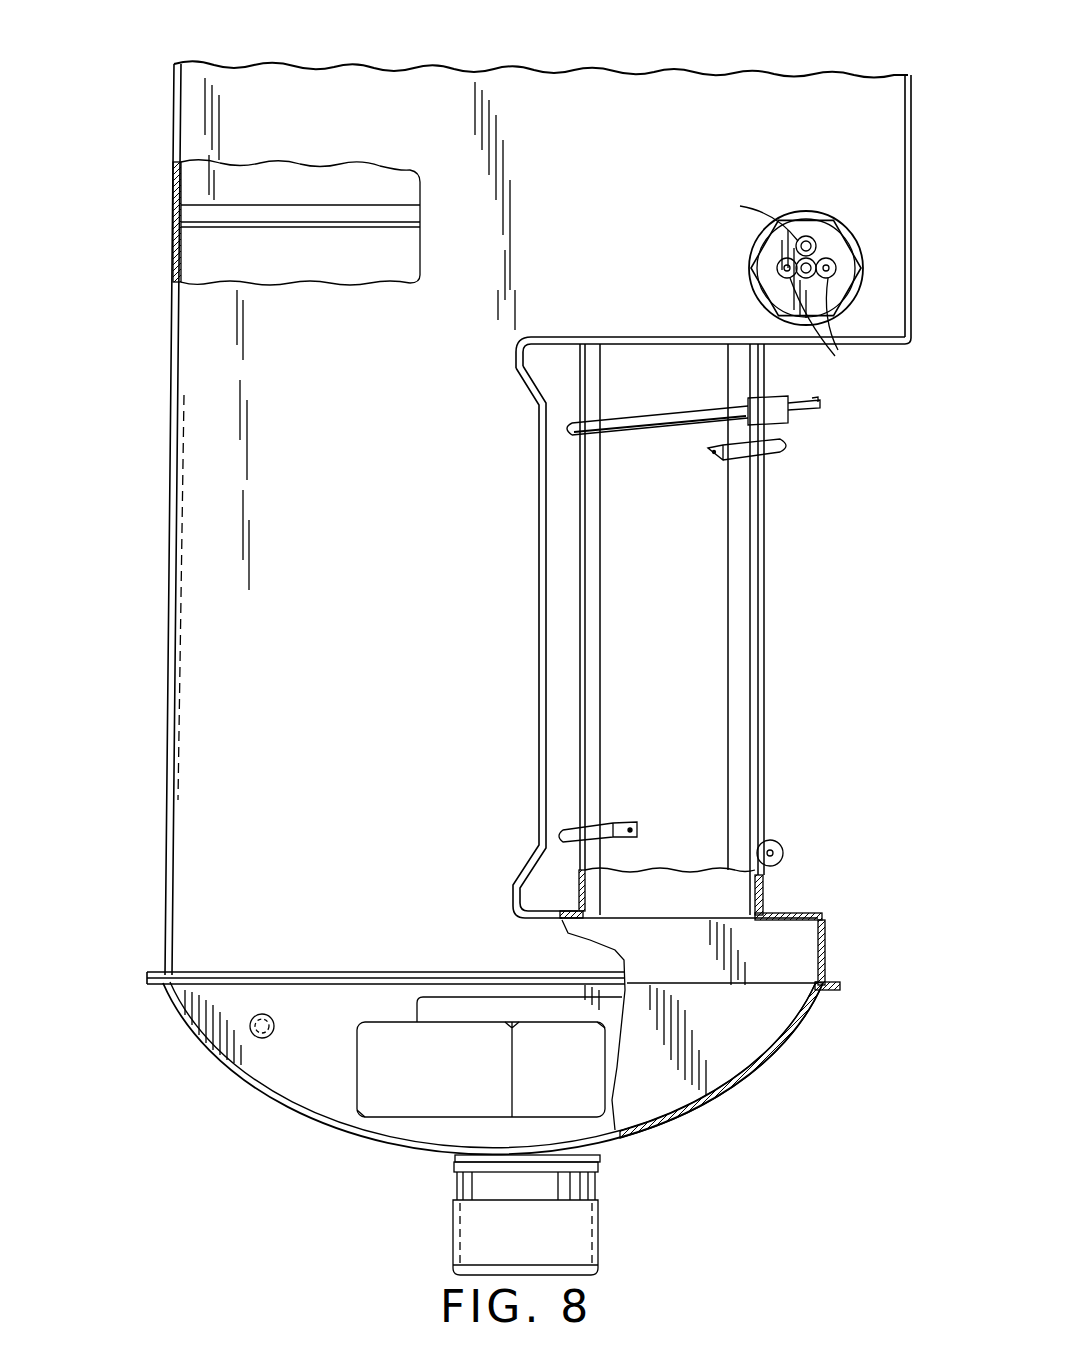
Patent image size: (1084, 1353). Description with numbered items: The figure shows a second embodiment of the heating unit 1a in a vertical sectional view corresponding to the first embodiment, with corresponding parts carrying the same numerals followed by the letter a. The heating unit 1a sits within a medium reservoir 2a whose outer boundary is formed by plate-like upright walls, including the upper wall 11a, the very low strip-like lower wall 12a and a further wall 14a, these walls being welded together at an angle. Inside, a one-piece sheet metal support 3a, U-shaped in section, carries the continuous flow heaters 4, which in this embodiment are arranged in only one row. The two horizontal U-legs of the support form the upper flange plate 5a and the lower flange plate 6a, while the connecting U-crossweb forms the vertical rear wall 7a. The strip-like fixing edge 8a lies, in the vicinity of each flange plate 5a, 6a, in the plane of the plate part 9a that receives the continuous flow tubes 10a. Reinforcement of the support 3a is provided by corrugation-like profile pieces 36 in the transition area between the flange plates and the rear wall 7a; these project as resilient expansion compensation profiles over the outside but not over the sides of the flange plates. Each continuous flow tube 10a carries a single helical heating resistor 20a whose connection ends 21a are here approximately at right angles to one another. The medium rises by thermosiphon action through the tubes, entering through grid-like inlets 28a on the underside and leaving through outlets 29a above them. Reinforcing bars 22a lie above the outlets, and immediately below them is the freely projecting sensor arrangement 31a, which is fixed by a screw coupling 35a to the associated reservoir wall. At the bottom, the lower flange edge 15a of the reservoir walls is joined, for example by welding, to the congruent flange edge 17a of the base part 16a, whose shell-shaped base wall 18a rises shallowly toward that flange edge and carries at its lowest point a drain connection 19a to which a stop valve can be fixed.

The heating unit 1a is at (898, 439).
The medium reservoir 2a is at (749, 49).
The support 3a is at (672, 591).
The continuous flow heater 4 is at (792, 694).
The upper flange plate 5a is at (579, 337).
The lower flange plate 6a is at (789, 915).
The rear wall 7a is at (539, 603).
The fixing edge 8a is at (880, 343).
The plate part 9a is at (706, 344).
The continuous flow tube 10a is at (766, 518).
The upper wall 11a is at (905, 118).
The lower wall 12a is at (824, 940).
The wall 14a is at (180, 246).
The flange edge 15a is at (833, 985).
The base part 16a is at (304, 1137).
The flange edge 17a is at (830, 990).
The base wall 18a is at (718, 1090).
The drain connection 19a is at (580, 1189).
The heating resistor 20a is at (700, 430).
The connection ends 21a is at (815, 386).
The reinforcing bars 22a is at (327, 220).
The inlets 28a is at (662, 918).
The outlets 29a is at (657, 337).
The sensor arrangement 31a is at (772, 210).
The screw coupling 35a is at (797, 264).
The corrugation-like profile pieces 36 is at (516, 357).